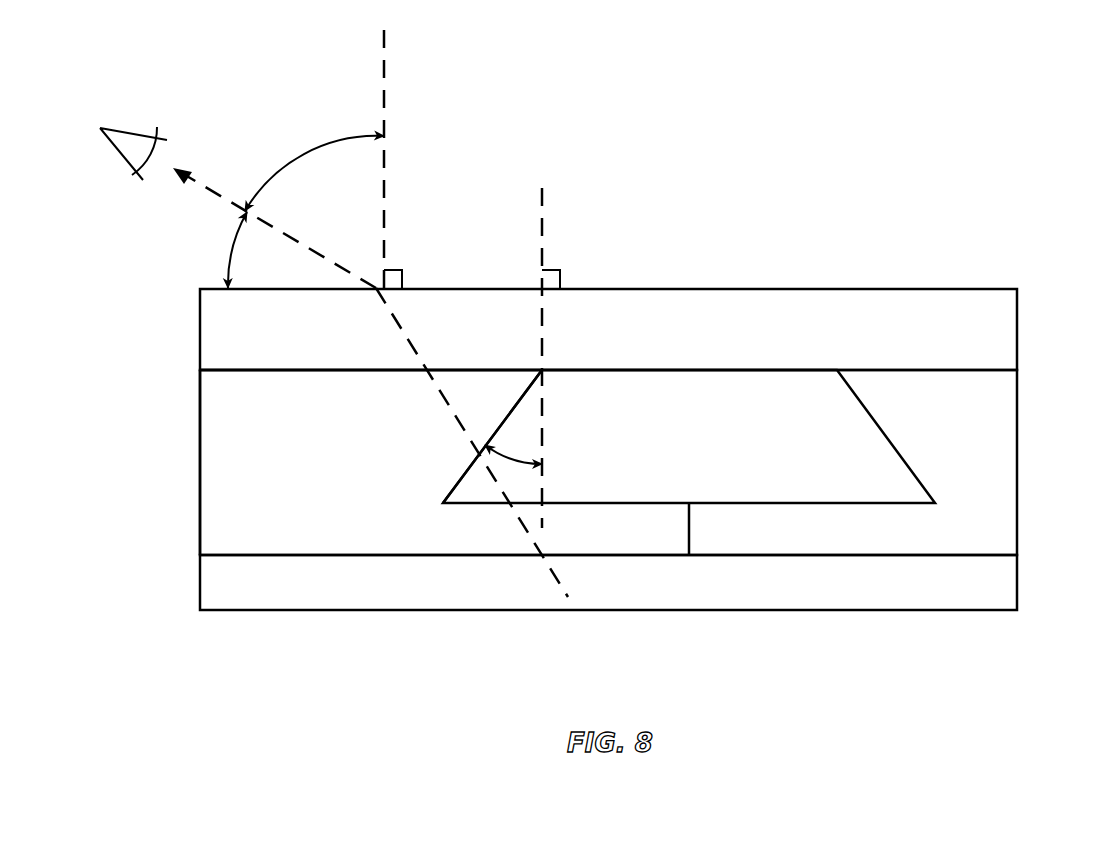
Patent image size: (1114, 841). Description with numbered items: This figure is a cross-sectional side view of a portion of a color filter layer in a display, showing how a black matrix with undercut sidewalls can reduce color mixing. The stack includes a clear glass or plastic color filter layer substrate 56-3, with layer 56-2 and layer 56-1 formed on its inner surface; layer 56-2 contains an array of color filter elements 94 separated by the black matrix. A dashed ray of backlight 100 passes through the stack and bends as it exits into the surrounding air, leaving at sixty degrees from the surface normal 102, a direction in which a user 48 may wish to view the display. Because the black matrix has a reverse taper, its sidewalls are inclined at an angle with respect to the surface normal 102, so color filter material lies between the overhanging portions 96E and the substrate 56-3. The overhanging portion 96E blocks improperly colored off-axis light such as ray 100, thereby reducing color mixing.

The user 48 is at (133, 136).
The layer 56-1 is at (1007, 580).
The layer 56-2 is at (1028, 370).
The color filter layer substrate 56-3 is at (1007, 318).
The color filter elements 94 is at (215, 520).
The overhanging portions 96E is at (477, 492).
The ray 100 is at (548, 567).
The surface normal 102 is at (384, 73).